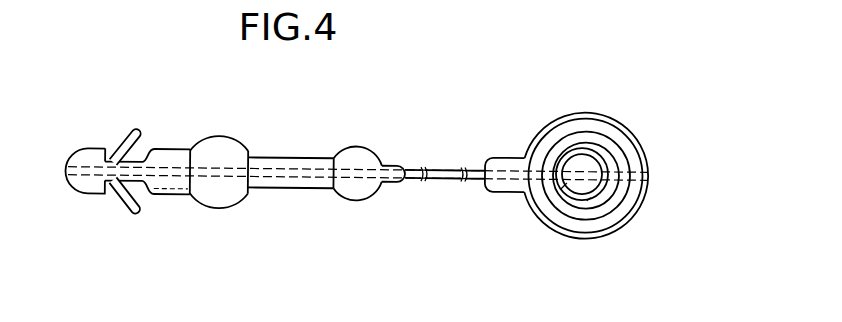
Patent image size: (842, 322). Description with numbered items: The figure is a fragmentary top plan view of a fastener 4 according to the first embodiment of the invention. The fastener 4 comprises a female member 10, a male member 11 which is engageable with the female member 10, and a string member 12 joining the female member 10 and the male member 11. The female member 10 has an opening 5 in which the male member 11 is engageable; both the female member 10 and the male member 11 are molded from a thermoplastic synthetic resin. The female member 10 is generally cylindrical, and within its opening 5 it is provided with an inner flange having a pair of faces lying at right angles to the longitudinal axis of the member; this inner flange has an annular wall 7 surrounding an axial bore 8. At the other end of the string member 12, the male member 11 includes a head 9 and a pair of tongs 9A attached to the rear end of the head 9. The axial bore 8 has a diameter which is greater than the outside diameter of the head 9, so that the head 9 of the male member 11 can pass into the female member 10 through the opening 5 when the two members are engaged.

The fastener 4 is at (302, 153).
The opening 5 is at (613, 202).
The annular wall 7 is at (598, 223).
The axial bore 8 is at (556, 205).
The head 9 is at (85, 200).
The tongs 9A is at (124, 130).
The female member 10 is at (646, 149).
The male member 11 is at (175, 198).
The string member 12 is at (296, 191).